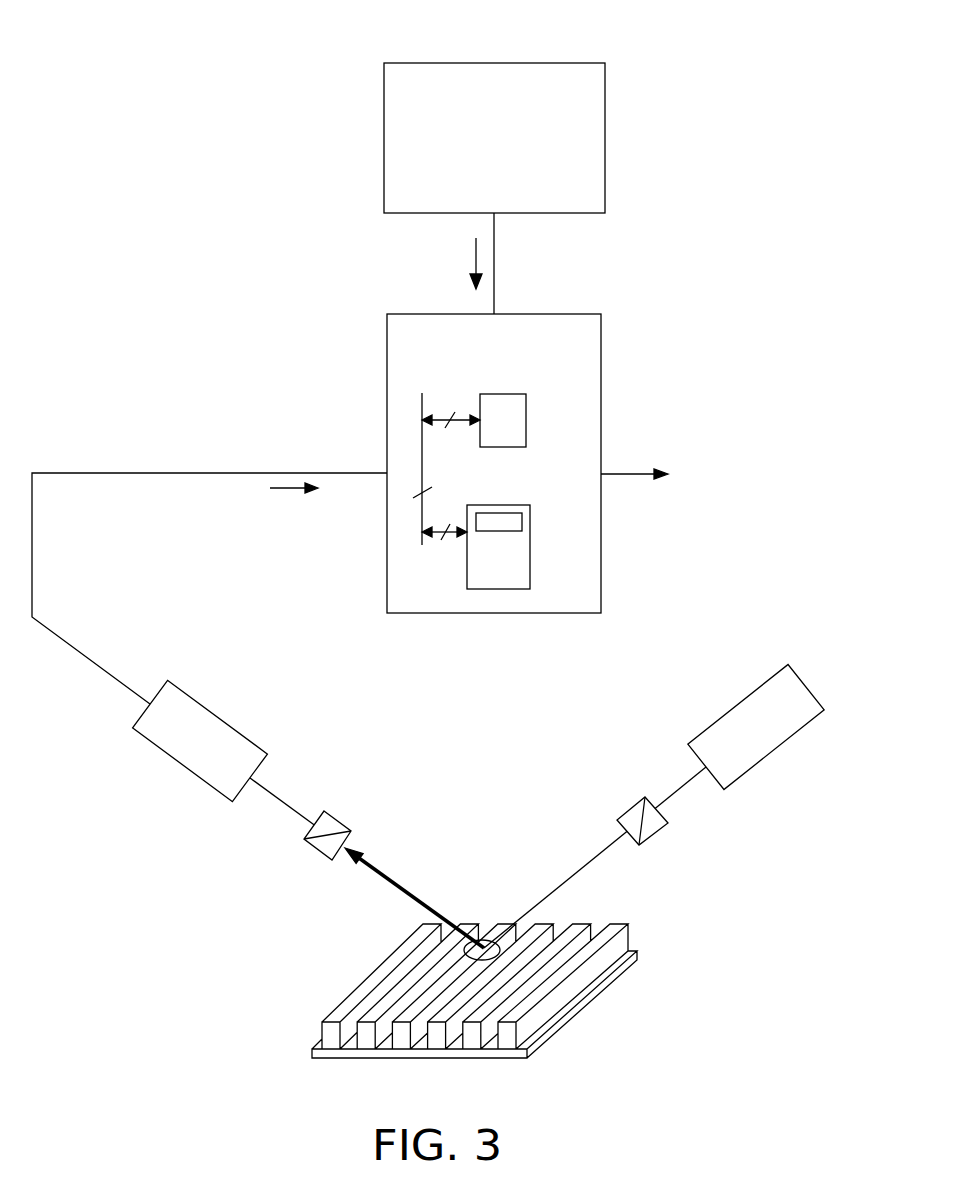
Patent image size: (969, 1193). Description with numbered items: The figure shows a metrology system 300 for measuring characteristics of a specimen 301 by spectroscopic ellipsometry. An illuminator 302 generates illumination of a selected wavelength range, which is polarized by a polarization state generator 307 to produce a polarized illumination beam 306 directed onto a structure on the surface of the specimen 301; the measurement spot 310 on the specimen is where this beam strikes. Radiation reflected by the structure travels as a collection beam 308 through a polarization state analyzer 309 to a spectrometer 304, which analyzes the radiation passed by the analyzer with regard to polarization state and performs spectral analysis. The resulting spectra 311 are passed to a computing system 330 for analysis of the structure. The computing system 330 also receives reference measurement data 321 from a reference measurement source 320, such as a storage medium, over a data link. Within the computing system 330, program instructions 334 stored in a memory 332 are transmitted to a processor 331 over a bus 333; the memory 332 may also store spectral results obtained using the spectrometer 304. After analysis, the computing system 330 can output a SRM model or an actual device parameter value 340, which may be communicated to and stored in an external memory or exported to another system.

The metrology system 300 is at (42, 108).
The specimen 301 is at (628, 937).
The illuminator 302 is at (740, 736).
The spectrometer 304 is at (181, 749).
The polarized illumination beam 306 is at (611, 846).
The polarization state generator 307 is at (660, 830).
The collection beam 308 is at (376, 873).
The polarization state analyzer 309 is at (305, 843).
The measurement spot 310 is at (464, 951).
The spectra 311 is at (291, 491).
The reference measurement source 320 is at (476, 191).
The reference measurement data 321 is at (470, 262).
The computing system 330 is at (483, 344).
The processor 331 is at (526, 416).
The memory 332 is at (467, 578).
The bus 333 is at (422, 463).
The program instructions 334 is at (522, 522).
The actual device parameter value 340 is at (633, 481).